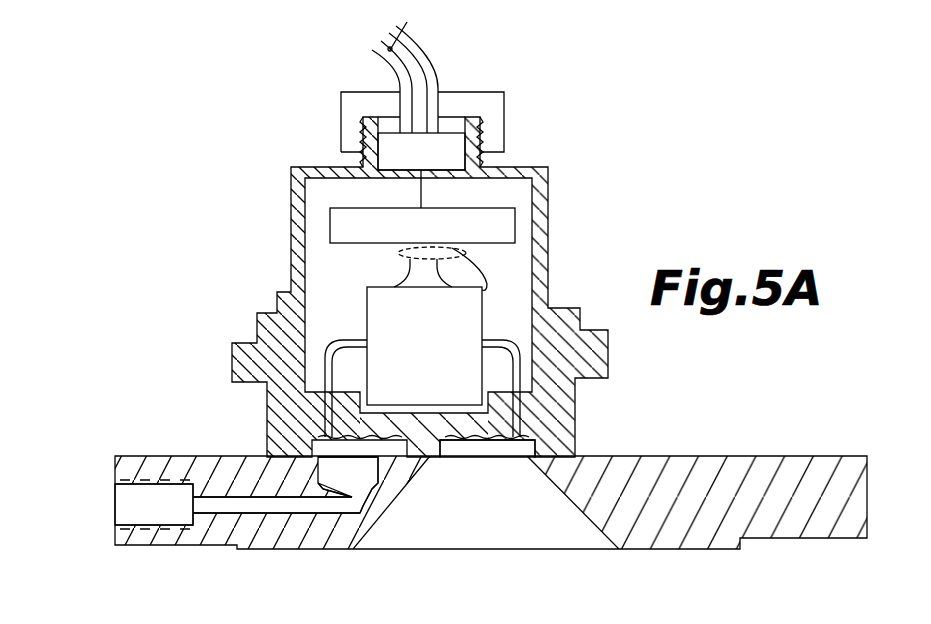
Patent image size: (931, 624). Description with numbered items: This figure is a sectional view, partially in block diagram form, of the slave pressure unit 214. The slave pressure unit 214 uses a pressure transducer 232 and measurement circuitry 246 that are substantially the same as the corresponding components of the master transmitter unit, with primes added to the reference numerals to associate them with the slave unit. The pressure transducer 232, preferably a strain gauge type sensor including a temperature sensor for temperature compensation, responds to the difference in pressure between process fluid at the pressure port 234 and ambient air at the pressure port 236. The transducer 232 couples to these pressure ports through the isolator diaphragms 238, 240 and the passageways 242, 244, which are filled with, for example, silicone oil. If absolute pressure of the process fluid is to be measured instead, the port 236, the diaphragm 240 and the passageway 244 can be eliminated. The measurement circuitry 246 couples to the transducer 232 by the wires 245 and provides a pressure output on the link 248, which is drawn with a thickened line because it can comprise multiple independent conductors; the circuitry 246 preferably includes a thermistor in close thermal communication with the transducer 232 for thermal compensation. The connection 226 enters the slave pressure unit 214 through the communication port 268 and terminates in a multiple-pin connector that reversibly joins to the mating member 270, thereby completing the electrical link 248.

The slave pressure unit 214 is at (613, 131).
The connection 226 is at (428, 50).
The link 248 is at (407, 22).
The communication port 268 is at (362, 128).
The mating member 270 is at (440, 164).
The measurement circuitry 246 is at (448, 242).
The wires 245 is at (400, 253).
The pressure transducer 232 is at (441, 356).
The passageway 244 is at (322, 415).
The passageway 242 is at (515, 408).
The pressure port 234 is at (487, 532).
The pressure port 236 is at (150, 507).
The isolator diaphragm 240 is at (385, 442).
The isolator diaphragm 238 is at (512, 447).